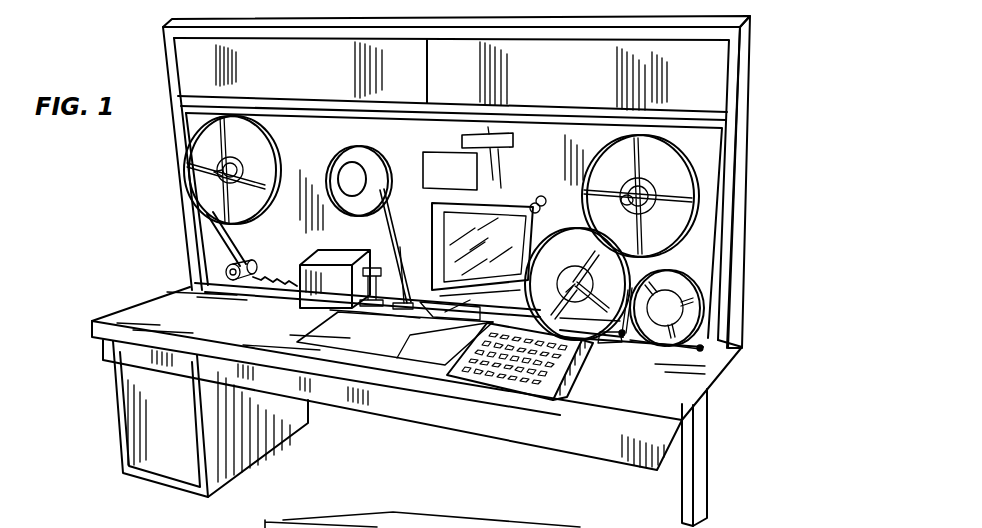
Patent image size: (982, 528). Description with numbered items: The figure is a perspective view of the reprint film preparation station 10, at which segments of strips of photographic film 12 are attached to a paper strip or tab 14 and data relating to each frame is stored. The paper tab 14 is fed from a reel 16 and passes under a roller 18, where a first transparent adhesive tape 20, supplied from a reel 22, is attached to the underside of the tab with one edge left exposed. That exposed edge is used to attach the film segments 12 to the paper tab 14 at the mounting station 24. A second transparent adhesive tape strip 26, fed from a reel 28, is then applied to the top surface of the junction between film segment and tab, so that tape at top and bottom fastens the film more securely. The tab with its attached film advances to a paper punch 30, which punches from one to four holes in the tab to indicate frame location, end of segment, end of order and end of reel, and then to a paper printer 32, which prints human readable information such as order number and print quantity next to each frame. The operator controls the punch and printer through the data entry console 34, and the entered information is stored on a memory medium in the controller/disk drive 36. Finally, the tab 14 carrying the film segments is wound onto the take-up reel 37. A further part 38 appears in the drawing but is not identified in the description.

The reprint film preparation station 10 is at (770, 200).
The photographic film segment 12 is at (240, 243).
The paper tab 14 is at (226, 268).
The reel 16 is at (557, 247).
The roller 18 is at (600, 344).
The first transparent adhesive tape 20 is at (650, 347).
The reel 22 is at (695, 309).
The mounting station 24 is at (437, 323).
The second transparent adhesive tape strip 26 is at (402, 247).
The reel 28 is at (397, 138).
The paper punch 30 is at (330, 310).
The paper printer 32 is at (300, 297).
The data entry console 34 is at (506, 380).
The controller/disk drive 36 is at (500, 216).
The take-up reel 37 is at (250, 156).
The indicator plate 38 is at (512, 140).